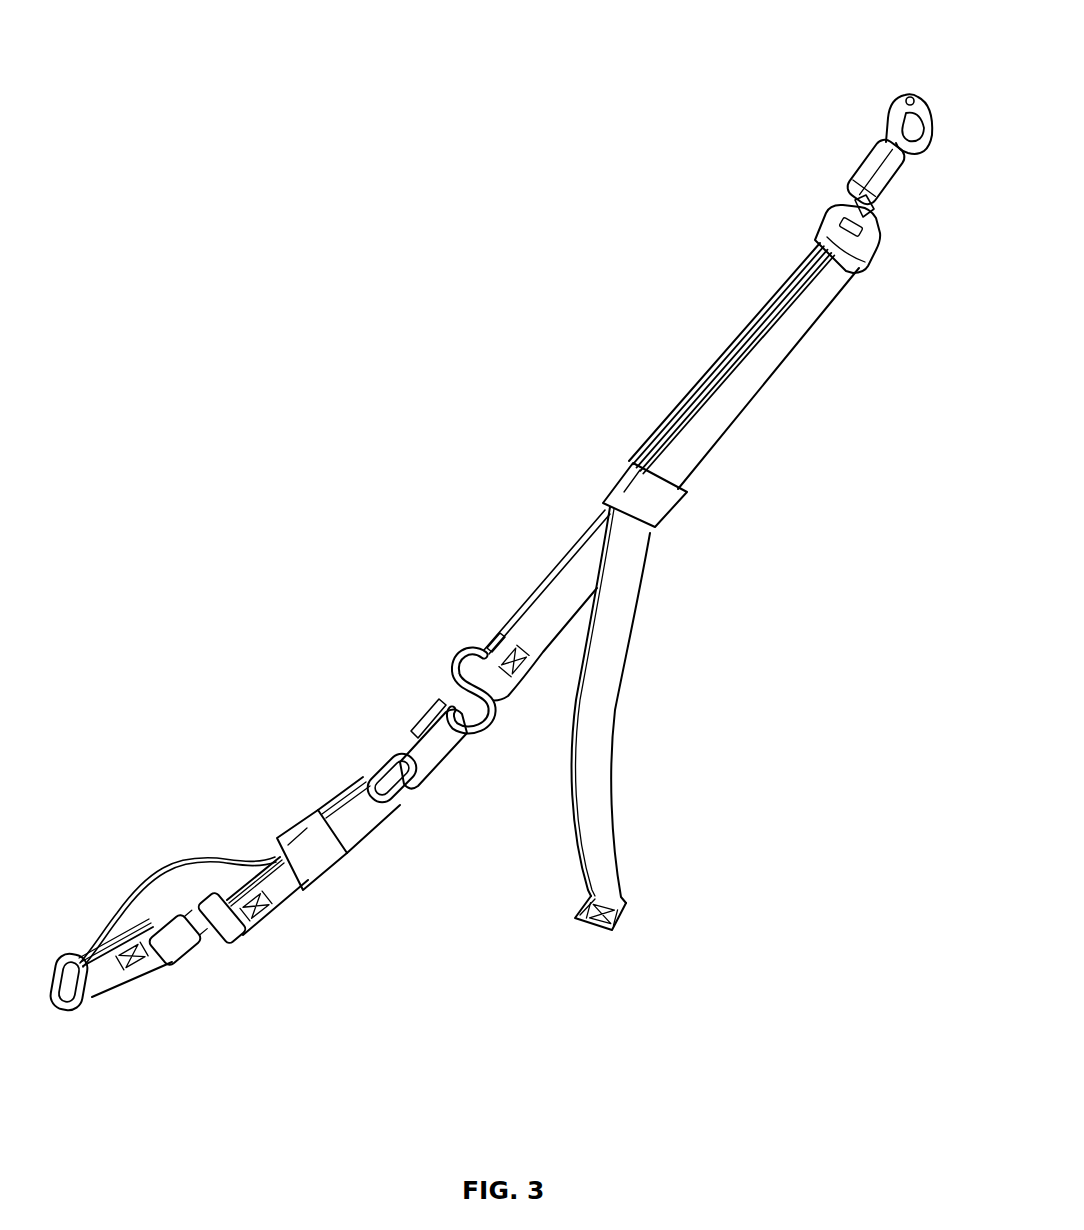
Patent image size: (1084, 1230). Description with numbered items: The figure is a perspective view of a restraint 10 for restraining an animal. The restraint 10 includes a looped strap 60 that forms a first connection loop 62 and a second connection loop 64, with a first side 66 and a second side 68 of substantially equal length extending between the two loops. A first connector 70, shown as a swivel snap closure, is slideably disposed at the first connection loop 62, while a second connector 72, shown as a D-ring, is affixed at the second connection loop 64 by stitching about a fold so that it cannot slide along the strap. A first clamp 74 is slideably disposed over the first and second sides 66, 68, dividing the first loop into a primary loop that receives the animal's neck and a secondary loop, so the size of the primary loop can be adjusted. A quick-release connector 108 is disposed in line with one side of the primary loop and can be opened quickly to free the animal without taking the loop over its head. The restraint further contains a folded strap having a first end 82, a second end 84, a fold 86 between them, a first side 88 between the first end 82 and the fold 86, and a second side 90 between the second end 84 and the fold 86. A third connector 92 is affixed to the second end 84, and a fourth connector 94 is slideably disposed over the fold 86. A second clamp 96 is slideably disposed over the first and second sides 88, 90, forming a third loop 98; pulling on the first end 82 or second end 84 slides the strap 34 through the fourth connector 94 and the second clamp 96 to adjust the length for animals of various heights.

The restraint 10 is at (334, 328).
The strap 34 is at (752, 375).
The looped strap 60 is at (112, 845).
The first connection loop 62 is at (402, 780).
The second connection loop 64 is at (93, 970).
The first side 66 is at (177, 868).
The second side 68 is at (290, 883).
The first connector 70 is at (440, 730).
The second connector 72 is at (70, 1012).
The first clamp 74 is at (298, 838).
The first end 82 is at (630, 905).
The second end 84 is at (530, 643).
The fold 86 is at (872, 262).
The first side 88 is at (585, 567).
The second side 90 is at (637, 643).
The third connector 92 is at (523, 687).
The fourth connector 94 is at (897, 92).
The second clamp 96 is at (662, 473).
The third loop 98 is at (726, 321).
The quick-release connector 108 is at (227, 933).